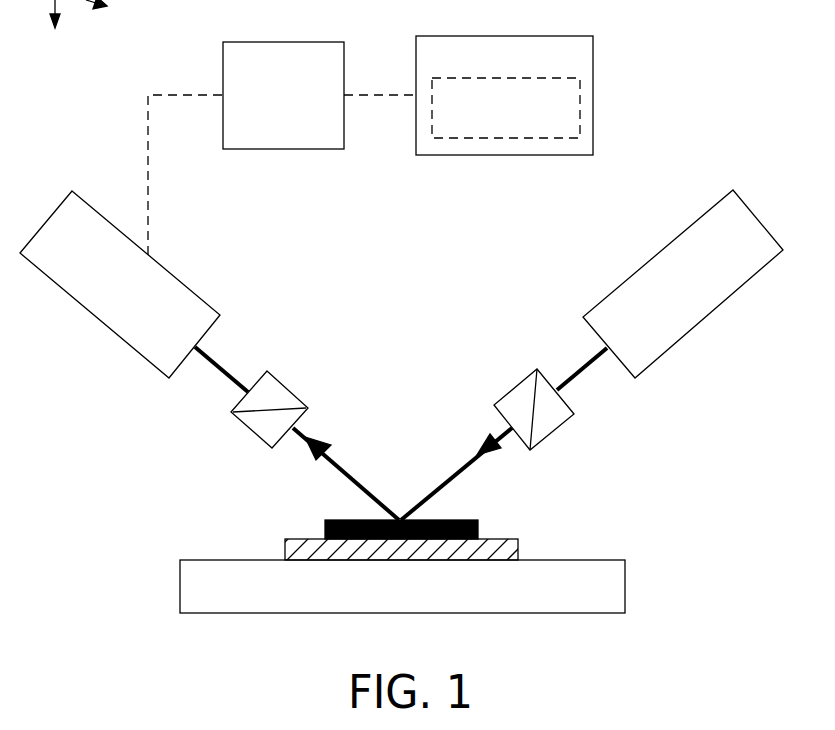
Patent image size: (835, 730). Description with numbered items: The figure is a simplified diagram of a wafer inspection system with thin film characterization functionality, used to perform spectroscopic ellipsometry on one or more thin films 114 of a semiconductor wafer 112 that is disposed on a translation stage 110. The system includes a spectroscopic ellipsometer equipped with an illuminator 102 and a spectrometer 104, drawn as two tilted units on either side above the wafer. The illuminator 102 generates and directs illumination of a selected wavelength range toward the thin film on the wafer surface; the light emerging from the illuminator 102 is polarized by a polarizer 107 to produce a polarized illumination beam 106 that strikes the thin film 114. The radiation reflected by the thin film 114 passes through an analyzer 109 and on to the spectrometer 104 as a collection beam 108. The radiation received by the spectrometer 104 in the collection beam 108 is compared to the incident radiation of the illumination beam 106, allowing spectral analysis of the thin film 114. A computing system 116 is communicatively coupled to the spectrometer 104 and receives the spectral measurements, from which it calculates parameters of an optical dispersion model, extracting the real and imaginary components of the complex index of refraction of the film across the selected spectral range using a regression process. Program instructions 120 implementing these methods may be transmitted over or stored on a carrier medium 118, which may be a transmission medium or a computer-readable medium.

The illuminator 102 is at (655, 252).
The spectrometer 104 is at (187, 288).
The illumination beam 106 is at (588, 373).
The polarizer 107 is at (512, 390).
The collection beam 108 is at (352, 473).
The analyzer 109 is at (252, 433).
The translation stage 110 is at (625, 587).
The semiconductor wafer 112 is at (518, 550).
The thin film 114 is at (478, 530).
The computing system 116 is at (223, 57).
The carrier medium 118 is at (593, 52).
The program instructions 120 is at (580, 92).